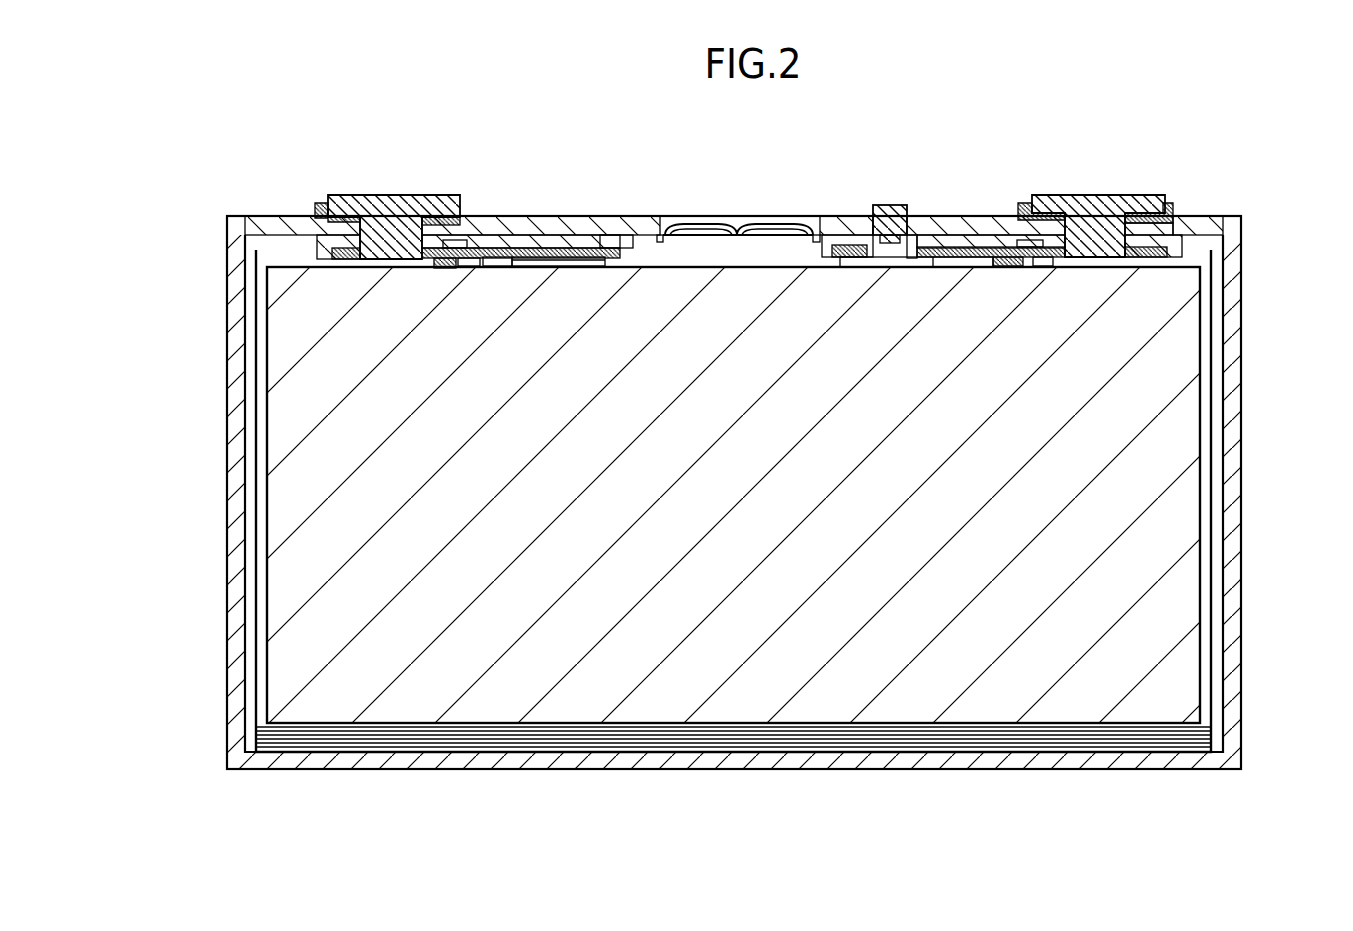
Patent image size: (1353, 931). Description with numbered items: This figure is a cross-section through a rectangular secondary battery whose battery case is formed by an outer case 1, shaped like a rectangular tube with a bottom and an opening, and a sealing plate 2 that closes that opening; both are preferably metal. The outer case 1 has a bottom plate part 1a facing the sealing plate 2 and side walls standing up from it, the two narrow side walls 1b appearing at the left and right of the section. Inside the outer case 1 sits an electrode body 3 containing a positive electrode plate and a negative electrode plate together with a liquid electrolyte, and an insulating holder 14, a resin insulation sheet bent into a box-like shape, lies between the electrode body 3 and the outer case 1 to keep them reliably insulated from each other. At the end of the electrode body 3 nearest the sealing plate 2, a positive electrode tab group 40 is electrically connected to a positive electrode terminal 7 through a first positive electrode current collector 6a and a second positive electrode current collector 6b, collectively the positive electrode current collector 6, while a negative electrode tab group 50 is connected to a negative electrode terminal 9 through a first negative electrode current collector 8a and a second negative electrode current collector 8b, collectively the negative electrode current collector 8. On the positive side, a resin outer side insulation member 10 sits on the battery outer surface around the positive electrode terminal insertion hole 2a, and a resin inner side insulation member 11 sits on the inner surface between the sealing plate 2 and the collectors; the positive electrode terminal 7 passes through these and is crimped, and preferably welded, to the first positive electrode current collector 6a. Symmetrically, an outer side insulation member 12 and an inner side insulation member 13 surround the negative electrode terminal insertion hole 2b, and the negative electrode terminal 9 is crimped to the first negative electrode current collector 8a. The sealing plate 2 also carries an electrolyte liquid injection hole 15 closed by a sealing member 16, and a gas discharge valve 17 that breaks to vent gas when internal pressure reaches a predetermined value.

The outer case 1 is at (1230, 472).
The bottom plate part 1a is at (1048, 770).
The narrow side walls 1b is at (1240, 328).
The sealing plate 2 is at (653, 228).
The positive electrode terminal insertion hole 2a is at (1160, 224).
The negative electrode terminal insertion hole 2b is at (350, 233).
The electrode body 3 is at (298, 583).
The positive electrode current collector 6 is at (987, 266).
The first positive electrode current collector 6a is at (1180, 250).
The second positive electrode current collector 6b is at (987, 252).
The positive electrode terminal 7 is at (1089, 208).
The negative electrode current collector 8 is at (447, 272).
The first negative electrode current collector 8a is at (340, 245).
The second negative electrode current collector 8b is at (492, 232).
The negative electrode terminal 9 is at (398, 210).
The outer side insulation member 10 is at (1152, 214).
The inner side insulation member 11 is at (935, 237).
The outer side insulation member 12 is at (318, 210).
The inner side insulation member 13 is at (598, 240).
The insulating holder 14 is at (1213, 537).
The electrolyte liquid injection hole 15 is at (857, 245).
The sealing member 16 is at (892, 208).
The gas discharge valve 17 is at (720, 232).
The positive electrode tab group 40 is at (845, 246).
The negative electrode tab group 50 is at (548, 256).